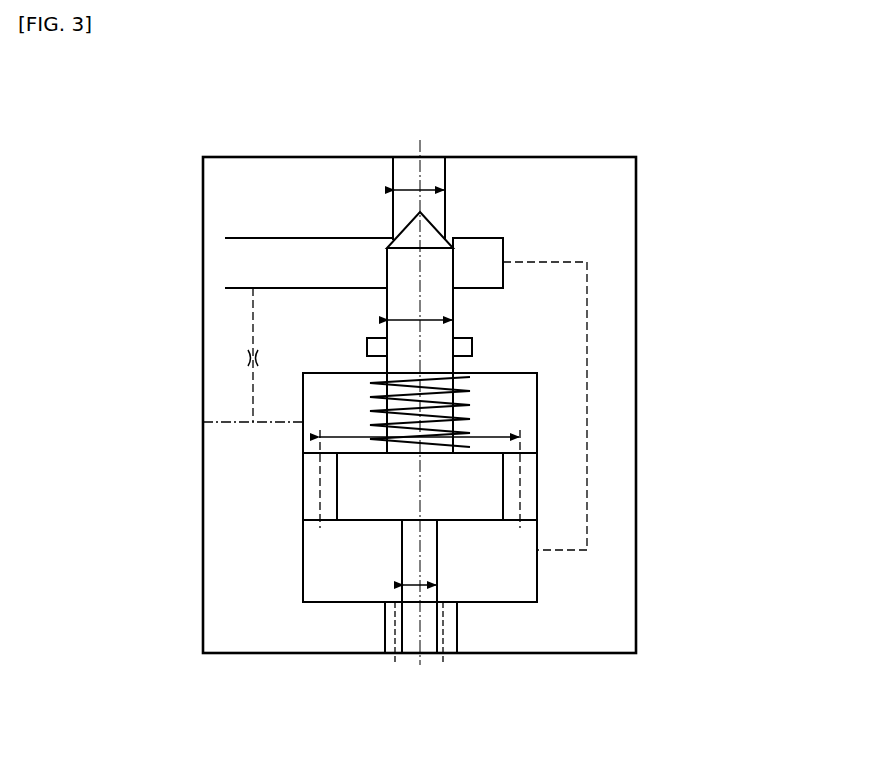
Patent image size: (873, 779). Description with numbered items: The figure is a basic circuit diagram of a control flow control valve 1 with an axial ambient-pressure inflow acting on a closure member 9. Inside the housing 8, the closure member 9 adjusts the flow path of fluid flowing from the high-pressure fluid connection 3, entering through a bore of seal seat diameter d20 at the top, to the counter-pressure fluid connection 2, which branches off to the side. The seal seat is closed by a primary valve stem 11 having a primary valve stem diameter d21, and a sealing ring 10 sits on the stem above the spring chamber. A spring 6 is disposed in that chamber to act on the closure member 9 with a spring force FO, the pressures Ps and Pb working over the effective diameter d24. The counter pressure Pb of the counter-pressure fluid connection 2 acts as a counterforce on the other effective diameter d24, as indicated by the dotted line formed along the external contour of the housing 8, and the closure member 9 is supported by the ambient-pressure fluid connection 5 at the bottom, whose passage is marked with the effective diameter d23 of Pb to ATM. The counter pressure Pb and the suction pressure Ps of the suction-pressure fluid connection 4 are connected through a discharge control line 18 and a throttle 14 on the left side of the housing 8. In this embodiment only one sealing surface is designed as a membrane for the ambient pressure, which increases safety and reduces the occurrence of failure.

The control flow control valve 1 is at (448, 415).
The counter-pressure fluid connection 2 is at (258, 258).
The high-pressure fluid connection 3 is at (438, 175).
The suction-pressure fluid connection 4 is at (235, 425).
The ambient-pressure fluid connection 5 is at (443, 655).
The spring member 6 is at (460, 398).
The housing 8 is at (613, 498).
The closure member 9 is at (390, 497).
The sealing ring 10 is at (368, 342).
The primary valve stem 11 is at (395, 268).
The throttle 14 is at (245, 352).
The discharge control line 18 is at (253, 395).
The seal seat diameter d20 is at (430, 210).
The primary valve stem diameter d21 is at (440, 318).
The effective diameter of Pb to ATM d23 is at (440, 575).
The effective diameter of Ps to Pb d24 is at (488, 432).